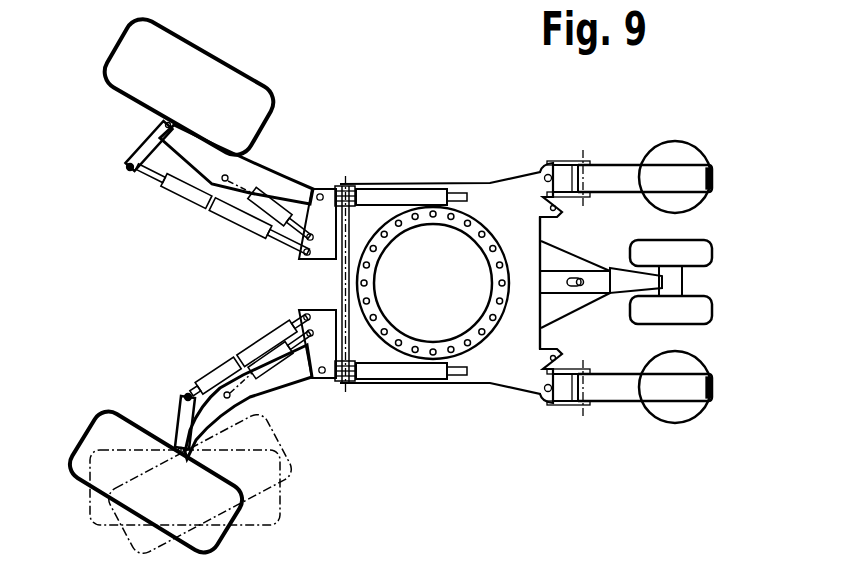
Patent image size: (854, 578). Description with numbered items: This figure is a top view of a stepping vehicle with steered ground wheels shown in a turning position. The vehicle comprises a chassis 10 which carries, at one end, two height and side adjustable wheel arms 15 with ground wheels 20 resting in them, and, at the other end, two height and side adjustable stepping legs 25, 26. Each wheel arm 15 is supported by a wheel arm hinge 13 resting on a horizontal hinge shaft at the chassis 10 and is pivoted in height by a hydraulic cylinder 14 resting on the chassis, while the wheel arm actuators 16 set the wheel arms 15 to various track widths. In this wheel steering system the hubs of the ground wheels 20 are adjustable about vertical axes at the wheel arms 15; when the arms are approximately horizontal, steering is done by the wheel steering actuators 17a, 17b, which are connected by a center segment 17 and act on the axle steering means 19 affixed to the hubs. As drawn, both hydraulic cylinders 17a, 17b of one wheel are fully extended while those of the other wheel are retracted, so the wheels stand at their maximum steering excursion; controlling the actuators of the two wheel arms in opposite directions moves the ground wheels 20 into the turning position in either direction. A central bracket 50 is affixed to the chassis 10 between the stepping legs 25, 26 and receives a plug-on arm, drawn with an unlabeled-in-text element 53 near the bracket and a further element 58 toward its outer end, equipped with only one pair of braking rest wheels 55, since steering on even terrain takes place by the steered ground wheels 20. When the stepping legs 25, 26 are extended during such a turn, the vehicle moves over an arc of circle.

The chassis 10 is at (517, 357).
The wheel arm hinge 13 is at (334, 192).
The hydraulic cylinder 14 is at (398, 197).
The wheel arm 15 is at (267, 182).
The wheel arm actuator 16 is at (308, 186).
The center segment 17 is at (208, 312).
The wheel steering actuator 17a is at (207, 370).
The wheel steering actuator 17b is at (270, 332).
The axle steering means 19 is at (140, 152).
The ground wheel 20 is at (223, 88).
The stepping leg 25 is at (620, 164).
The stepping leg 26 is at (620, 402).
The central bracket 50 is at (528, 254).
The drawbar slot 53 is at (577, 277).
The rest wheels 55 is at (700, 253).
The coupling 58 is at (627, 286).